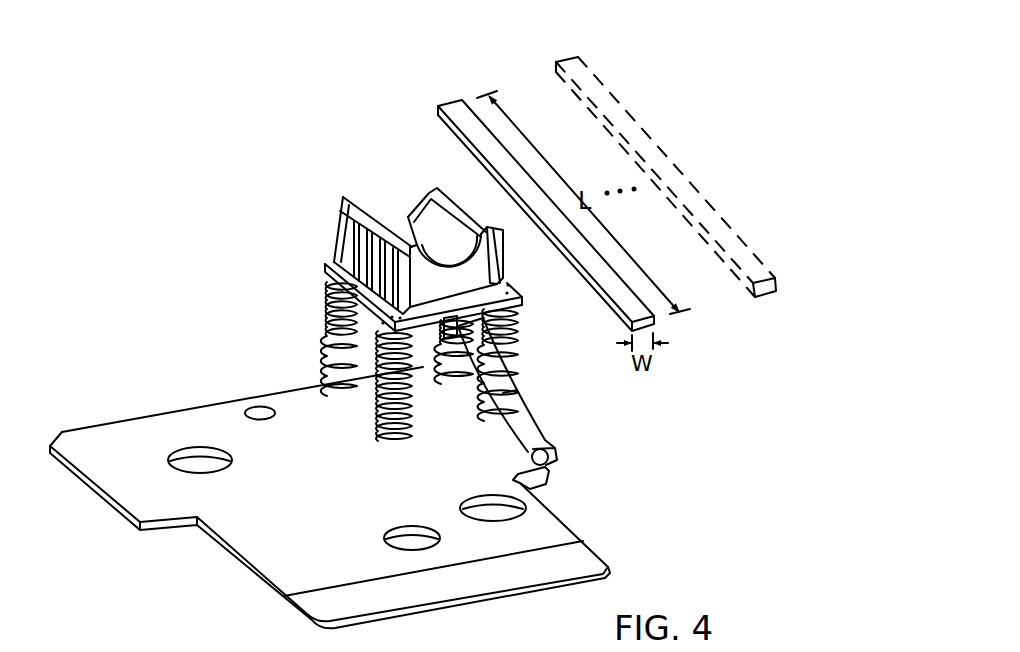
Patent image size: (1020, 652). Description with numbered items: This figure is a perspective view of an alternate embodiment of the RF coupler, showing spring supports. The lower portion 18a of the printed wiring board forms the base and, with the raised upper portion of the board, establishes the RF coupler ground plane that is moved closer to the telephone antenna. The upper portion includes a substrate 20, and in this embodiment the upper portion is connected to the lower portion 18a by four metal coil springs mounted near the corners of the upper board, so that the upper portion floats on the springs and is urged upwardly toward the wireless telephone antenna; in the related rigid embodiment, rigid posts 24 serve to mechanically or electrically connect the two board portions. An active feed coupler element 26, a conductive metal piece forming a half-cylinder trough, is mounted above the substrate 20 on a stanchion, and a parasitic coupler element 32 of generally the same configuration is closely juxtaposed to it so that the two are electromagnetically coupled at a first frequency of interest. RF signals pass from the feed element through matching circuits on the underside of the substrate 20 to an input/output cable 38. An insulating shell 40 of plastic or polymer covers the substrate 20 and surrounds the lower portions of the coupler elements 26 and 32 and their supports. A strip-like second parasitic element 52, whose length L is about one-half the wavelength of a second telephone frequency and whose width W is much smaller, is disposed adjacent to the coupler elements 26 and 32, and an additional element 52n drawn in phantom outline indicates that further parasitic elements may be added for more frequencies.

The lower portion of PWB 18a is at (312, 492).
The substrate 20 is at (518, 306).
The rigid posts 24 is at (330, 321).
The active feed coupler element 26 is at (452, 255).
The parasitic coupler element 32 is at (425, 227).
The input/output cable 38 is at (522, 413).
The insulating shell 40 is at (474, 299).
The second parasitic element 52 is at (437, 106).
The additional parasitic element 52n is at (556, 62).